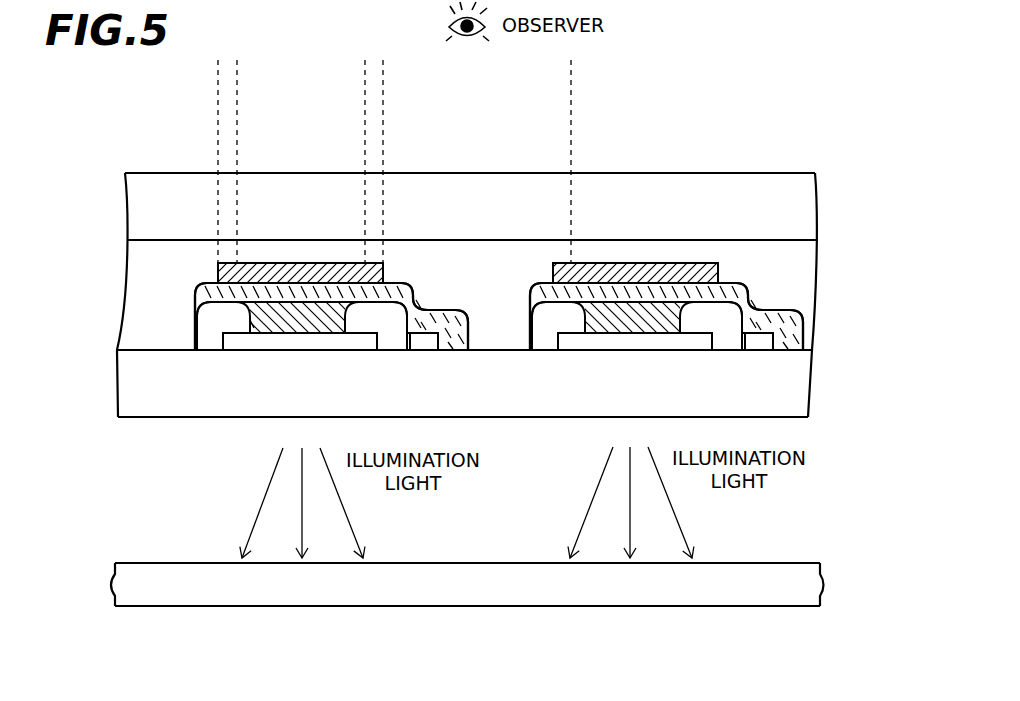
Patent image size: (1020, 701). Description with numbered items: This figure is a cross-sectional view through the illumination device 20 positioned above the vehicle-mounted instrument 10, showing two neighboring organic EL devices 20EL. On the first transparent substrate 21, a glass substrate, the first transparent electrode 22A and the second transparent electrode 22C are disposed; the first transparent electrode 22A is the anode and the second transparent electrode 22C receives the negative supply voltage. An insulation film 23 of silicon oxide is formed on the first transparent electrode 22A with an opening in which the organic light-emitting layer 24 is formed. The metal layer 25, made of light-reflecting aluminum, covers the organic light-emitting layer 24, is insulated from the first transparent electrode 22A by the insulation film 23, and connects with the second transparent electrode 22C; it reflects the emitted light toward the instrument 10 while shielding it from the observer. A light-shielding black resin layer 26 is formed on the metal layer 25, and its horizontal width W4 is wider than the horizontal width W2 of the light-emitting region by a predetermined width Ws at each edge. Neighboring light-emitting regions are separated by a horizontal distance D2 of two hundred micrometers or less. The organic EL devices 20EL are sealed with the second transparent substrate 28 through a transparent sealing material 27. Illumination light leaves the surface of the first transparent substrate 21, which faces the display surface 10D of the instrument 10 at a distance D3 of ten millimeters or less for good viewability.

The vehicle-mounted instrument 10 is at (810, 582).
The display surface 10D is at (780, 561).
The illumination device 20 is at (780, 128).
The organic EL device 20EL is at (172, 290).
The first transparent substrate 21 is at (797, 385).
The first transparent electrode 22A is at (265, 342).
The second transparent electrode 22C is at (423, 345).
The insulation film 23 is at (210, 338).
The organic light-emitting layer 24 is at (317, 335).
The metal layer 25 is at (425, 296).
The resin layer 26 is at (373, 275).
The sealing material 27 is at (807, 293).
The second transparent substrate 28 is at (807, 207).
The horizontal width of the resin layer W4 is at (219, 76).
The horizontal width of the light-emitting region W2 is at (237, 107).
The horizontal distance between light-emitting regions D2 is at (571, 107).
The predetermined width Ws is at (263, 138).
The distance between display surface and light-emitting surface D3 is at (150, 419).